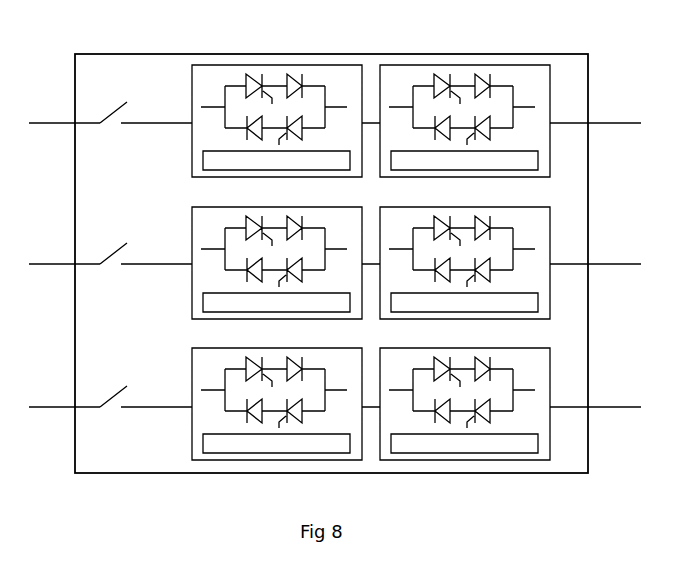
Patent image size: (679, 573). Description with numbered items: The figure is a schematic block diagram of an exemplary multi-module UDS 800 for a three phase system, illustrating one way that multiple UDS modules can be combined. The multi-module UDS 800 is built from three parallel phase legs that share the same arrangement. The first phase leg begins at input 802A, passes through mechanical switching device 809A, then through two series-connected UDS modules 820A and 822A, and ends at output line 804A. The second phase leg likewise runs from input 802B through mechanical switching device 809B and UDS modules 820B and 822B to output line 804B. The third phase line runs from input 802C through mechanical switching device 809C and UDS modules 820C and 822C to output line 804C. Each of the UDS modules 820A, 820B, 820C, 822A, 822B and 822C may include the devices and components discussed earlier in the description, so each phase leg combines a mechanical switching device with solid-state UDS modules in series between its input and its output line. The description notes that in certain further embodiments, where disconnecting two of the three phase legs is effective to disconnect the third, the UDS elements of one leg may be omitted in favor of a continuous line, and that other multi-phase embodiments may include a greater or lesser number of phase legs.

The multi-module UDS 800 is at (627, 82).
The input 802A is at (58, 125).
The input 802B is at (58, 266).
The input 802C is at (58, 409).
The output line 804A is at (617, 125).
The output line 804B is at (617, 266).
The output line 804C is at (617, 409).
The mechanical switching device 809A is at (103, 112).
The mechanical switching device 809B is at (103, 253).
The mechanical switching device 809C is at (103, 396).
The UDS module 820A is at (273, 65).
The UDS module 820B is at (192, 220).
The UDS module 820C is at (280, 460).
The UDS module 822A is at (465, 65).
The UDS module 822B is at (568, 200).
The UDS module 822C is at (473, 462).